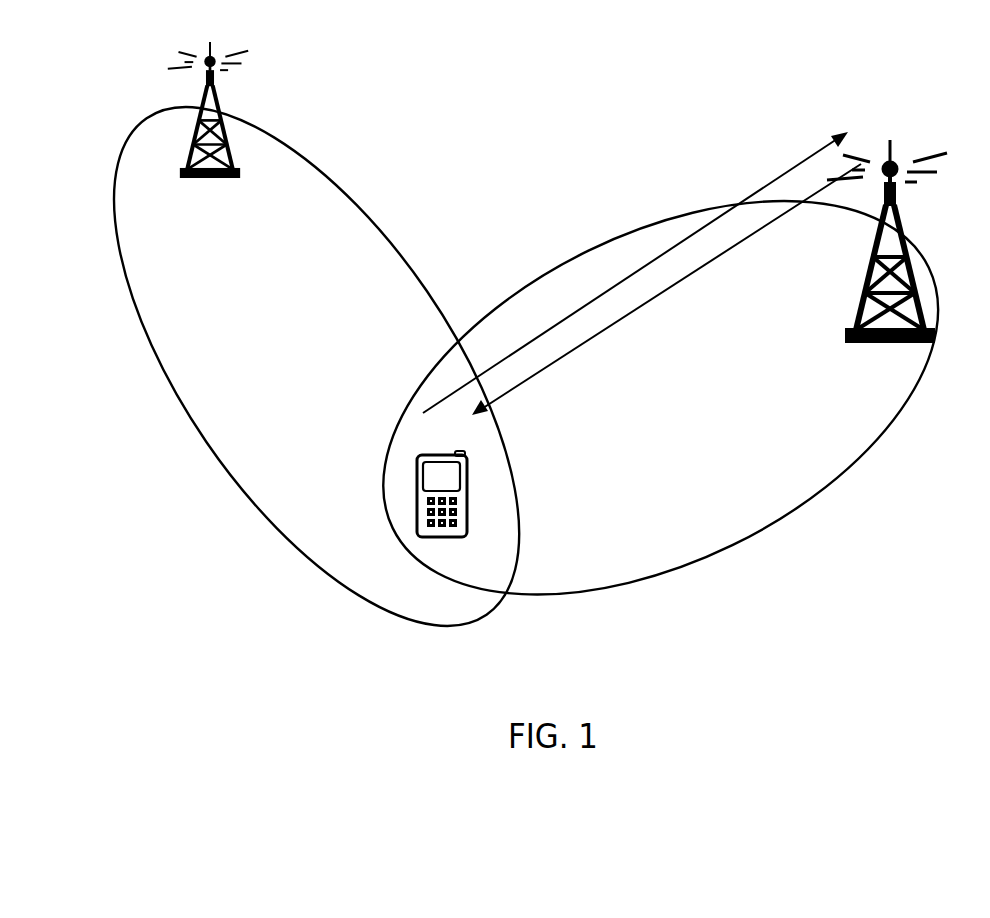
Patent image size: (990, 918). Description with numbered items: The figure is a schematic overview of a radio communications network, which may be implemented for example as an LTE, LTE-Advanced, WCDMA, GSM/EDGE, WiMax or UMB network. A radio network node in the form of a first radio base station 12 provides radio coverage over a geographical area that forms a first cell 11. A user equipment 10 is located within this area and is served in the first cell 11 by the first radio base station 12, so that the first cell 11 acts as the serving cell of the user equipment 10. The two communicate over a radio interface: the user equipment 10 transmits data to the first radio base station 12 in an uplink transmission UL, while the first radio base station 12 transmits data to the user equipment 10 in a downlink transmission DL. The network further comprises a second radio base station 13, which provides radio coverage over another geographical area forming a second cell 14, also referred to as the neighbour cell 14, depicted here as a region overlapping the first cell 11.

The user equipment 10 is at (417, 487).
The first cell 11 is at (638, 504).
The first radio base station 12 is at (902, 303).
The second radio base station 13 is at (222, 152).
The second cell 14 is at (287, 424).
The uplink transmission UL is at (688, 237).
The downlink transmission DL is at (695, 268).